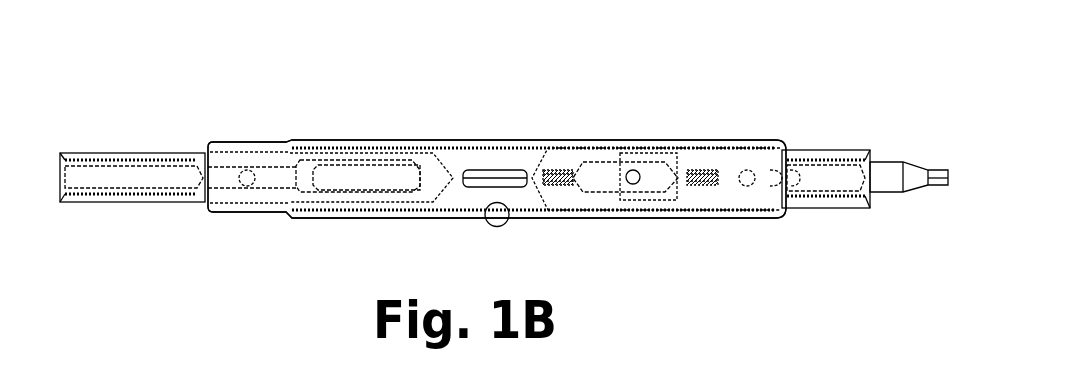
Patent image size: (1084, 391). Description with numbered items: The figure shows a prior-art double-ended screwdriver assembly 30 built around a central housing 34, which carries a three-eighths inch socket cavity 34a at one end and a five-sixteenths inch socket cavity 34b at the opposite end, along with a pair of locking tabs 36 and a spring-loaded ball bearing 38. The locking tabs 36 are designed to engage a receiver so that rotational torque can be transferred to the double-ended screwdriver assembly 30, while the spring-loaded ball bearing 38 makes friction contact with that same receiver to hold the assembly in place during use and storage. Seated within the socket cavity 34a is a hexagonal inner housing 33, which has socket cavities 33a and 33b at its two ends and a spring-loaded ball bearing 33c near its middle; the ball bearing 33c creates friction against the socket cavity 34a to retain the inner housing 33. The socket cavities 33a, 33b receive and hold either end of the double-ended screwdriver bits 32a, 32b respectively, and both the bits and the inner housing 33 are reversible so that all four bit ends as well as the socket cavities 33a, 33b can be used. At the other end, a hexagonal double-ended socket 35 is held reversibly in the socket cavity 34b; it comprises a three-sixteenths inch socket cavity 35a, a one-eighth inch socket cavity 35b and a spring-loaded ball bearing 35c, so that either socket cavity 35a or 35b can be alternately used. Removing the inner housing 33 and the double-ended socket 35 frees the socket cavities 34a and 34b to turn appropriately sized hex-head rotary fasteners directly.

The double-ended screwdriver assembly 30 is at (278, 108).
The double-ended screwdriver bit 32a is at (600, 158).
The double-ended screwdriver bit 32b is at (890, 162).
The inner housing 33 is at (802, 208).
The socket cavity 33a is at (678, 200).
The socket cavity 33b is at (838, 195).
The spring-loaded ball bearing 33c is at (747, 170).
The central housing 34 is at (350, 140).
The socket cavity 34a is at (605, 210).
The socket cavity 34b is at (312, 200).
The double-ended socket 35 is at (190, 202).
The socket cavity 35a is at (98, 160).
The socket cavity 35b is at (405, 165).
The spring-loaded ball bearing 35c is at (243, 172).
The locking tabs 36 is at (498, 170).
The spring-loaded ball bearing 38 is at (505, 225).